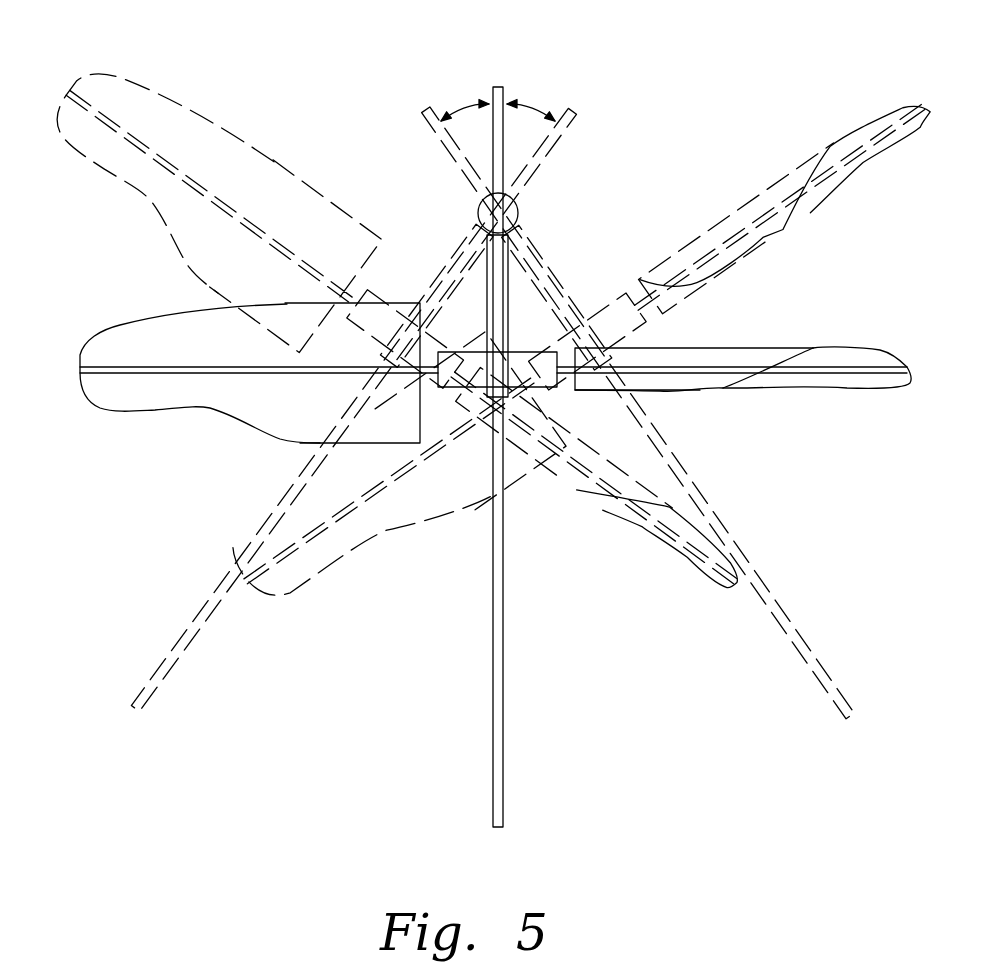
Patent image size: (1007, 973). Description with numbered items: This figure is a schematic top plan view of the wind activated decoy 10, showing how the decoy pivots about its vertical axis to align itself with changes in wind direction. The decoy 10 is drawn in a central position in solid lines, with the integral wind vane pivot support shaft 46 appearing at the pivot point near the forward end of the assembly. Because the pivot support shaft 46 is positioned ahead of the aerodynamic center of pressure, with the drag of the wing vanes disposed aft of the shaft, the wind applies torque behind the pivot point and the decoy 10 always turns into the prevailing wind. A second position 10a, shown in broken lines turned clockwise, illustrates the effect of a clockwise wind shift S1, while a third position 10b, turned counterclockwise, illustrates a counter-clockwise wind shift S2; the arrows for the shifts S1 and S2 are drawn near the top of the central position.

The wind activated decoy 10 is at (493, 652).
The second position 10a is at (201, 600).
The third position 10b is at (800, 649).
The wind vane pivot support shaft 46 is at (480, 208).
The clockwise wind shift S1 is at (522, 102).
The counter-clockwise wind shift S2 is at (468, 101).